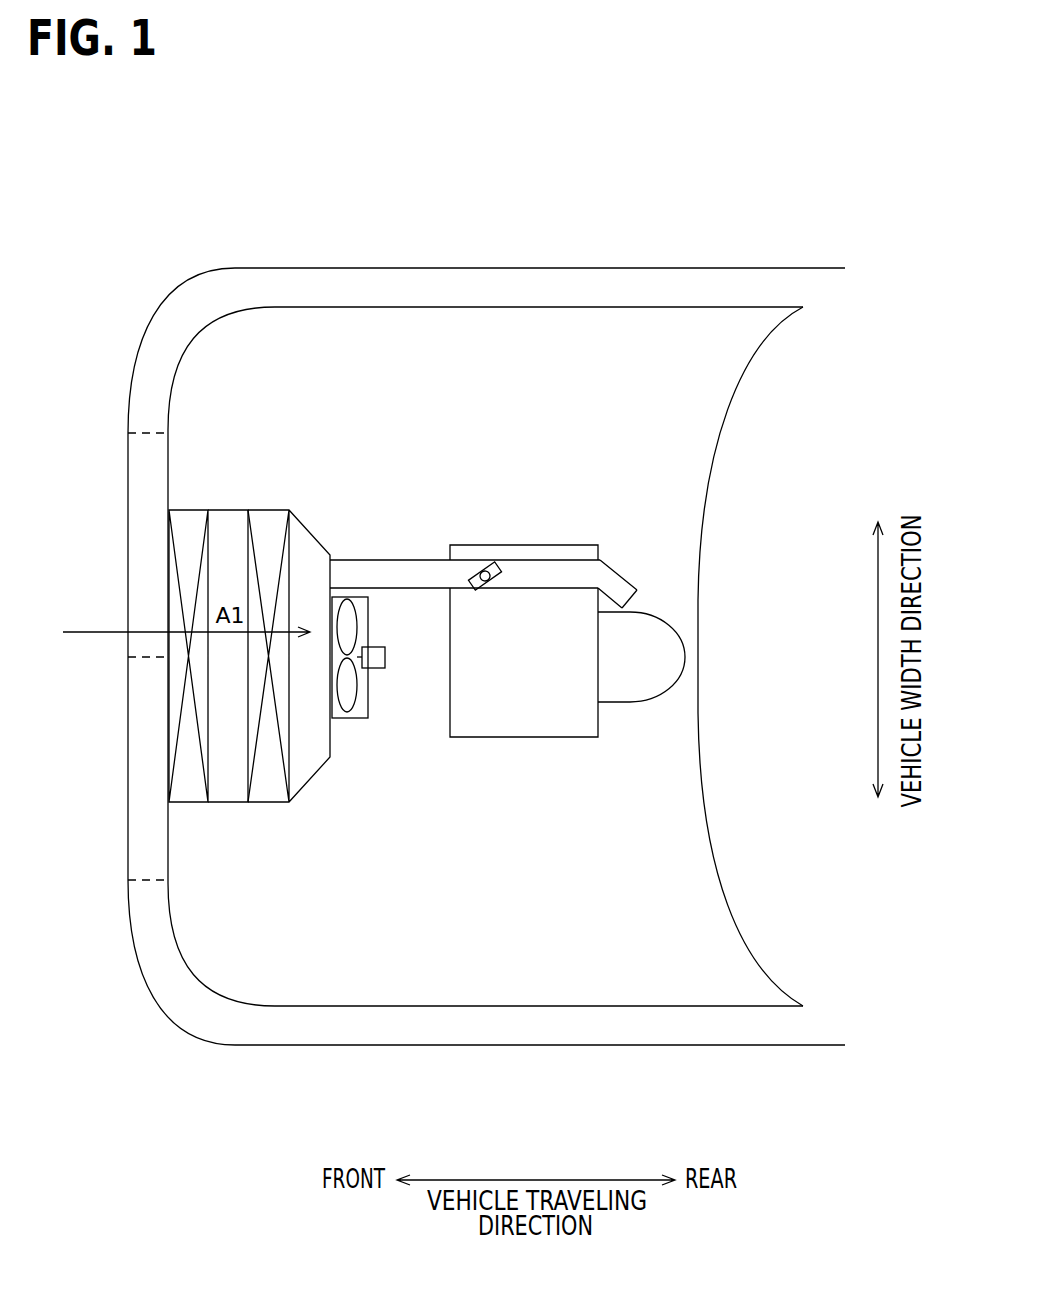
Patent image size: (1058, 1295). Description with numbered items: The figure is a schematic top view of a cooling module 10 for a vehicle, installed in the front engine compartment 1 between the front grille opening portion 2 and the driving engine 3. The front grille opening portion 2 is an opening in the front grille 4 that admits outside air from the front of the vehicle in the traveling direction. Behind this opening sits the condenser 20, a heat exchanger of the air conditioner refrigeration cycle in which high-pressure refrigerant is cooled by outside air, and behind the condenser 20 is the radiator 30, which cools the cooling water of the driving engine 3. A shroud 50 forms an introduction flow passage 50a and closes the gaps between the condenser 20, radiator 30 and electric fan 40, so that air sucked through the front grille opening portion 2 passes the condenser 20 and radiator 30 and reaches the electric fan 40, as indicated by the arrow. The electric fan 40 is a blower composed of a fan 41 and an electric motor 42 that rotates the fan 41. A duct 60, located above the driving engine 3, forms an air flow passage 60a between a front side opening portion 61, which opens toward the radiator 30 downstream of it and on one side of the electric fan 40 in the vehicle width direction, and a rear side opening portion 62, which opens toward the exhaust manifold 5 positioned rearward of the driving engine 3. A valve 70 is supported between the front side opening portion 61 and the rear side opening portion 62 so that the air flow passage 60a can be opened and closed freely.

The front engine compartment 1 is at (306, 957).
The front grille opening portion 2 is at (146, 851).
The driving engine 3 is at (553, 737).
The front grille 4 is at (215, 1017).
The exhaust manifold 5 is at (643, 702).
The cooling module 10 is at (320, 648).
The condenser 20 is at (187, 522).
The radiator 30 is at (247, 593).
The electric fan 40 is at (424, 860).
The fan 41 is at (348, 697).
The electric motor 42 is at (375, 665).
The shroud 50 is at (289, 585).
The introduction flow passage 50a is at (306, 677).
The duct 60 is at (558, 390).
The air flow passage 60a is at (530, 573).
The front side opening portion 61 is at (340, 562).
The rear side opening portion 62 is at (636, 593).
The valve 70 is at (470, 570).